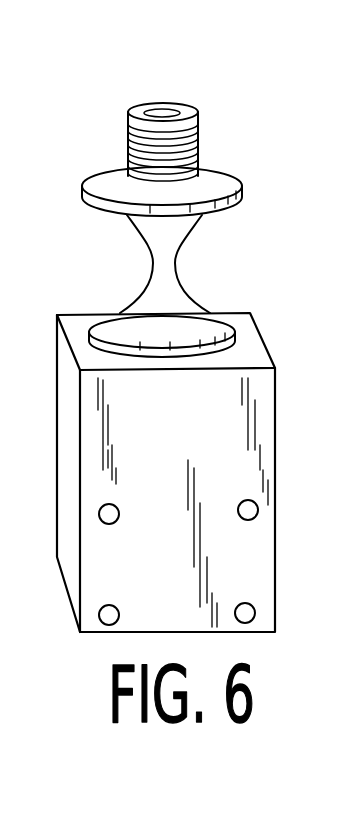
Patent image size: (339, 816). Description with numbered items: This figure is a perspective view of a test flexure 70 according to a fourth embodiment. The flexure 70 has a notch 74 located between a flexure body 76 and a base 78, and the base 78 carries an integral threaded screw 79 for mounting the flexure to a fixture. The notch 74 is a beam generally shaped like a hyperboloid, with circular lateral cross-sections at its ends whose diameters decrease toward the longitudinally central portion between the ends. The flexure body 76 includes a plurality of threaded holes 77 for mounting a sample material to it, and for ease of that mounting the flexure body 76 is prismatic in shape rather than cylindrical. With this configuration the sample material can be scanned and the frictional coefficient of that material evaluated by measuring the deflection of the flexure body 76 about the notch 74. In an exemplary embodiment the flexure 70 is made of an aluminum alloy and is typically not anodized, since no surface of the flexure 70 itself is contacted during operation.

The flexure 70 is at (233, 108).
The notch 74 is at (175, 263).
The flexure body 76 is at (68, 428).
The threaded holes 77 is at (110, 605).
The base 78 is at (245, 185).
The threaded screw 79 is at (127, 132).